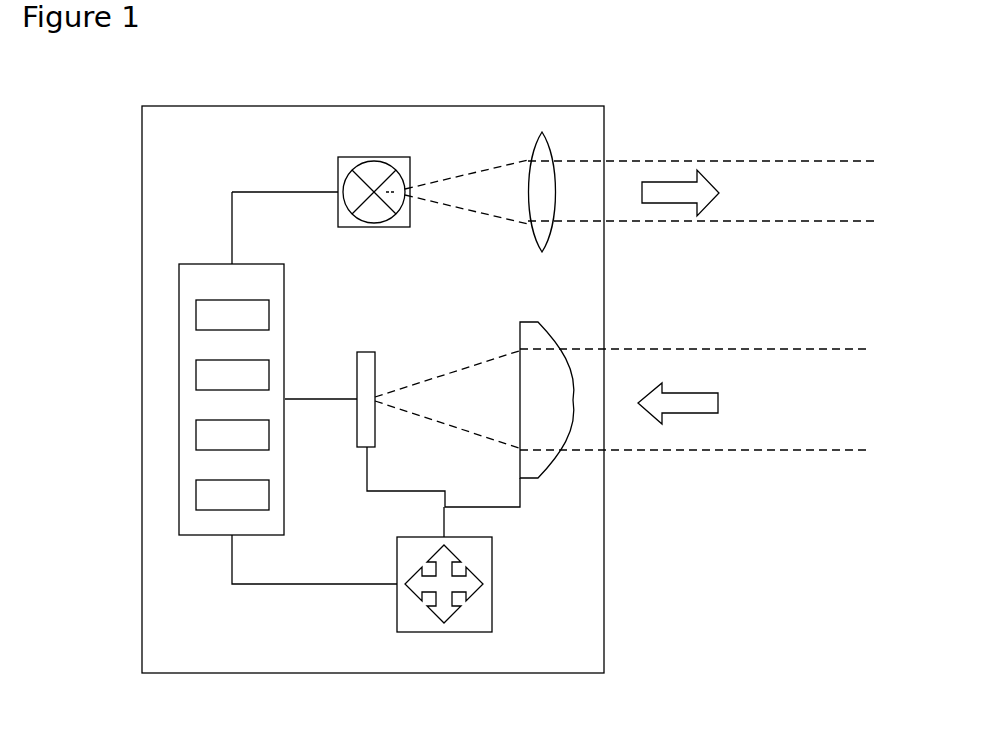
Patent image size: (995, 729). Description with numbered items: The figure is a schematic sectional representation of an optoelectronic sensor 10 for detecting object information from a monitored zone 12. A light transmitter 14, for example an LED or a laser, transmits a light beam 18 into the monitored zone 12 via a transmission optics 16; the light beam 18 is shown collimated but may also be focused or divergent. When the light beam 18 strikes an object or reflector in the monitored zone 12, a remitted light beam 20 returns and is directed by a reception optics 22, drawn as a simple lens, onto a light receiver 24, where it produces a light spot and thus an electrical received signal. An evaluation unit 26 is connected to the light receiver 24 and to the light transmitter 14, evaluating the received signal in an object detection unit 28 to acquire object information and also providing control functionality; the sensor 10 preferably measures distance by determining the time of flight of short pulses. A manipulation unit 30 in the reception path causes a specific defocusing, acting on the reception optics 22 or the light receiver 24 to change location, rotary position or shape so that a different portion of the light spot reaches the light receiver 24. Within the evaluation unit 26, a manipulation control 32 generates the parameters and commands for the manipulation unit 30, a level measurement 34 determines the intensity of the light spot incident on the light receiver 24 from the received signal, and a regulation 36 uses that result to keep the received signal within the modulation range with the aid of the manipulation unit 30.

The optoelectronic sensor 10 is at (410, 110).
The monitored zone 12 is at (871, 112).
The light transmitter 14 is at (347, 178).
The transmission optics 16 is at (540, 145).
The light beam 18 is at (770, 203).
The remitted light beam 20 is at (722, 371).
The reception optics 22 is at (542, 462).
The light receiver 24 is at (367, 368).
The evaluation unit 26 is at (202, 528).
The object detection unit 28 is at (208, 312).
The manipulation unit 30 is at (480, 617).
The manipulation control 32 is at (208, 375).
The level measurement 34 is at (208, 440).
The regulation 36 is at (208, 502).